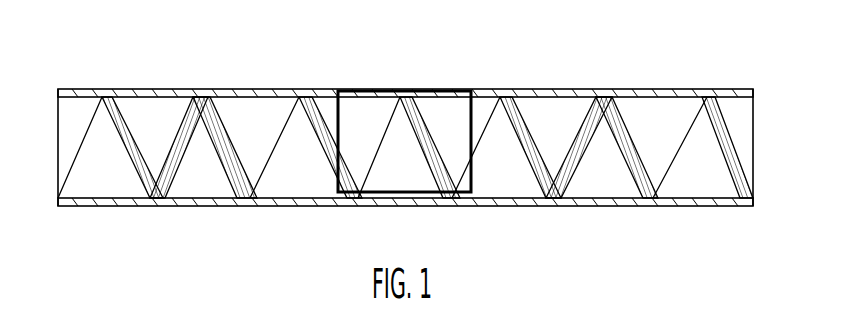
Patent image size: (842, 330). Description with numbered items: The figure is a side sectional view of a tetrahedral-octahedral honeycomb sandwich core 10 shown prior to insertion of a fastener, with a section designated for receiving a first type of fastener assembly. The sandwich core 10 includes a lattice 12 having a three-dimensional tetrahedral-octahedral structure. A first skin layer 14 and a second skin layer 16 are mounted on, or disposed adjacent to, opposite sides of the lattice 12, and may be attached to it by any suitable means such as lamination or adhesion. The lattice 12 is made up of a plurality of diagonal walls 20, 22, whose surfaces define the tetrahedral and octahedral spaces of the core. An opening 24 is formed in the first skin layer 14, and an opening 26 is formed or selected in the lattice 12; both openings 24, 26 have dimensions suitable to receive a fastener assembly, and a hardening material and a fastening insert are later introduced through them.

The sandwich core 10 is at (146, 70).
The lattice 12 is at (723, 113).
The first skin layer 14 is at (567, 90).
The second skin layer 16 is at (608, 206).
The diagonal wall 20 is at (233, 172).
The diagonal wall 22 is at (176, 172).
The opening 24 is at (350, 90).
The opening 26 is at (463, 110).